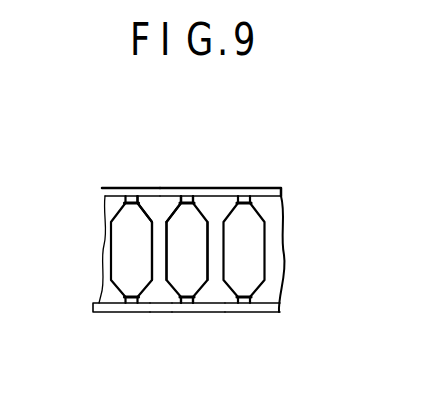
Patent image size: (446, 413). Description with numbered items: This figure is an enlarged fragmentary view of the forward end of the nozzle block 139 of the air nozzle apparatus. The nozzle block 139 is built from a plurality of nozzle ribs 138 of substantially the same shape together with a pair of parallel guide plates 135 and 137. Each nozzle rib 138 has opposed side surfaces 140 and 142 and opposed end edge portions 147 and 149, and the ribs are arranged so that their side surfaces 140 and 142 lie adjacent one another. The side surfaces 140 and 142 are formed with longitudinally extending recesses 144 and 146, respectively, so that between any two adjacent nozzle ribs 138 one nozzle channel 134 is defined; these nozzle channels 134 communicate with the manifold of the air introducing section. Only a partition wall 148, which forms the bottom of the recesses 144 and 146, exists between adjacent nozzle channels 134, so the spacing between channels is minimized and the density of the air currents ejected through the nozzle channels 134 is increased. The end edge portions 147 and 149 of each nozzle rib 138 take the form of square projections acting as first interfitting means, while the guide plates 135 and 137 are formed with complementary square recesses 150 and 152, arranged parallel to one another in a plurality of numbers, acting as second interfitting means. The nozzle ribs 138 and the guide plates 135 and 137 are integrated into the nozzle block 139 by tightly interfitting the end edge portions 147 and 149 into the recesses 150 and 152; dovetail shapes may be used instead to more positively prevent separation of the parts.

The nozzle channel 134 is at (190, 272).
The guide plate 135 is at (231, 309).
The guide plate 137 is at (268, 189).
The nozzle rib 138 is at (157, 207).
The nozzle block 139 is at (117, 181).
The side surface 140 is at (190, 303).
The side surface 142 is at (129, 306).
The recess 144 is at (169, 238).
The recess 146 is at (153, 233).
The end edge portion 147 is at (154, 298).
The partition wall 148 is at (152, 258).
The end edge portion 149 is at (150, 205).
The square recess 150 is at (172, 300).
The square recess 152 is at (174, 196).